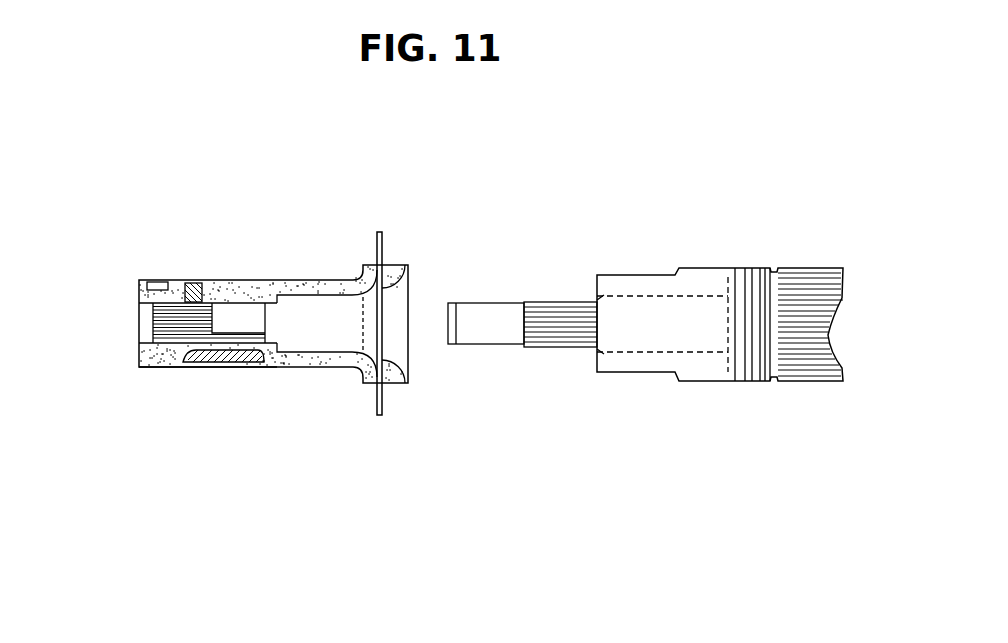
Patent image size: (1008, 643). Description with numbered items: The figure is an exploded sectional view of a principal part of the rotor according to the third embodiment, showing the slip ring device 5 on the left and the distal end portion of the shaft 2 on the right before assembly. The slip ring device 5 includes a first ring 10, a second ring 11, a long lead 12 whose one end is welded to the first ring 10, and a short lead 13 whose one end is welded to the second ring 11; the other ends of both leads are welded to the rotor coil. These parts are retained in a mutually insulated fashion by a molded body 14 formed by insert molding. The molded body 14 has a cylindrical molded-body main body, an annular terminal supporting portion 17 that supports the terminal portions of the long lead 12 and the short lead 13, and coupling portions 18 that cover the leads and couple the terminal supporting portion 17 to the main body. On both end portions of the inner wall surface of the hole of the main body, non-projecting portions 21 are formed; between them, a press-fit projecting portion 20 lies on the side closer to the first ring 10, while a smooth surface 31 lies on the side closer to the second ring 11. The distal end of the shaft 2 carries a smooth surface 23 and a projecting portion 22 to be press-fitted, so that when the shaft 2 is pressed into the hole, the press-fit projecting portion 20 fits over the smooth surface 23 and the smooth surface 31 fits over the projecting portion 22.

The shaft 2 is at (714, 266).
The slip ring device 5 is at (292, 372).
The first ring 10 is at (166, 280).
The second ring 11 is at (236, 278).
The long lead 12 is at (350, 367).
The short lead 13 is at (324, 280).
The molded body 14 is at (236, 366).
The terminal supporting portion 17 is at (392, 258).
The coupling portions 18 is at (340, 370).
The press-fit projecting portion 20 is at (178, 333).
The non-projecting portions 21 is at (148, 322).
The projecting portion to be press-fitted 22 is at (565, 330).
The smooth surface 23 is at (499, 335).
The smooth surface 31 is at (265, 363).